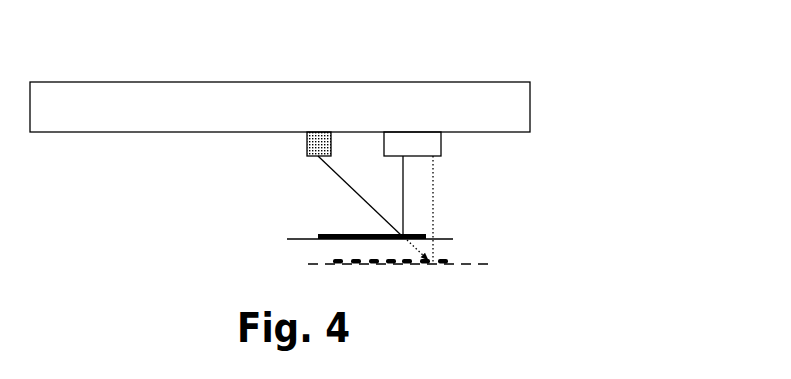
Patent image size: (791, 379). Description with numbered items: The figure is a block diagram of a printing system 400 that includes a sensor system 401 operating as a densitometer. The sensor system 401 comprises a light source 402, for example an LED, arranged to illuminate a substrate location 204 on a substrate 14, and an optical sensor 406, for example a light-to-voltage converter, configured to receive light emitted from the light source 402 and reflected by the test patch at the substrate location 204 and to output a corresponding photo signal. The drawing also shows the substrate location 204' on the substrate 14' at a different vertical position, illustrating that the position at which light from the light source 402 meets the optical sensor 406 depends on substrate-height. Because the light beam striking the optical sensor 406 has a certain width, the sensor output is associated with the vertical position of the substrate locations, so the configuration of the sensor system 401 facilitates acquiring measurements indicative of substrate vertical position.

The printing system 400 is at (96, 76).
The sensor system 401 is at (275, 172).
The light source 402 is at (324, 140).
The optical sensor 406 is at (395, 140).
The substrate location 204 is at (339, 224).
The substrate 14 is at (345, 256).
The substrate location 204' is at (427, 251).
The substrate 14' is at (428, 280).